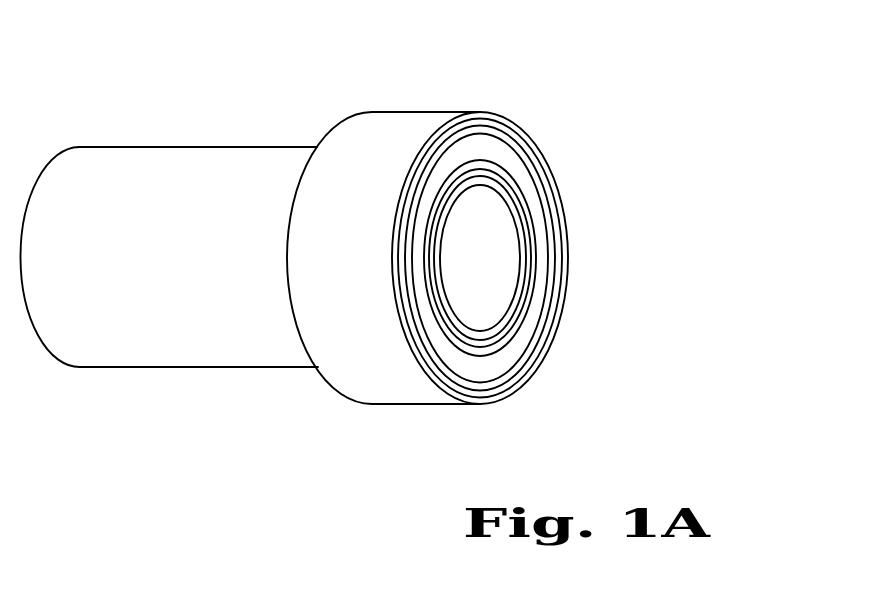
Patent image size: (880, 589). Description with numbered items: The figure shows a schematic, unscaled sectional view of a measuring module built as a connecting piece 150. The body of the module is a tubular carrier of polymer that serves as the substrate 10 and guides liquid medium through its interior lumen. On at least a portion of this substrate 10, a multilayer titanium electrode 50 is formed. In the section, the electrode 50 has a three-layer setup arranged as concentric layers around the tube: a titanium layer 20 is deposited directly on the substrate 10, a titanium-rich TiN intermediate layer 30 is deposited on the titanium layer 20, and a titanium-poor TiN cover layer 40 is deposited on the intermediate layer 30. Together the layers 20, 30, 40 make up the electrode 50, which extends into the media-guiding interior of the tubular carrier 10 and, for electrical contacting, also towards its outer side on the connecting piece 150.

The substrate 10 is at (148, 355).
The titanium layer 20 is at (520, 167).
The titanium-rich TiN intermediate layer 30 is at (496, 132).
The titanium-poor TiN cover layer 40 is at (496, 123).
The multilayer titanium electrode 50 is at (638, 17).
The connecting piece 150 is at (293, 125).